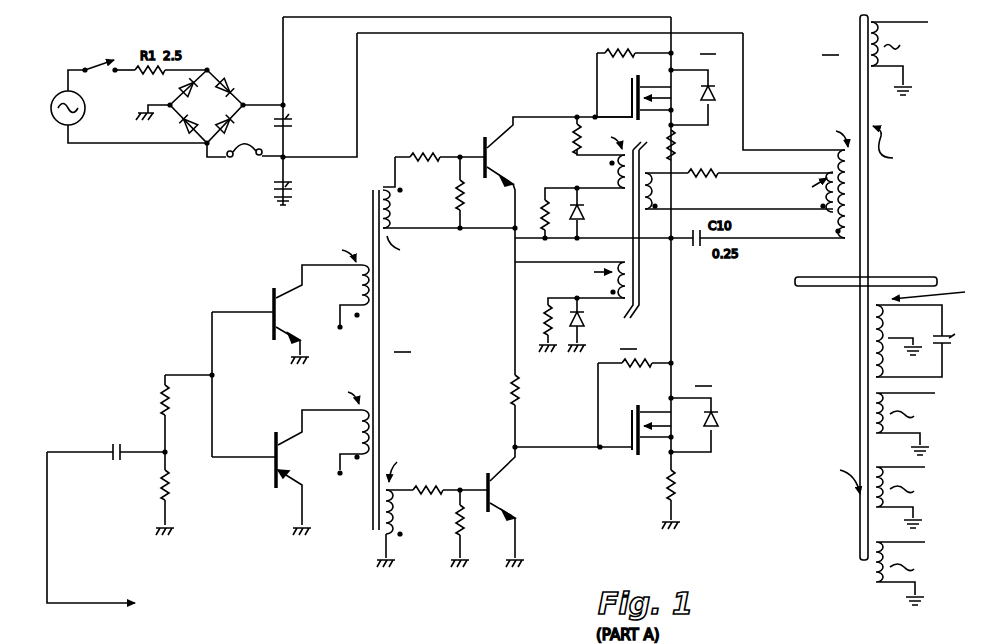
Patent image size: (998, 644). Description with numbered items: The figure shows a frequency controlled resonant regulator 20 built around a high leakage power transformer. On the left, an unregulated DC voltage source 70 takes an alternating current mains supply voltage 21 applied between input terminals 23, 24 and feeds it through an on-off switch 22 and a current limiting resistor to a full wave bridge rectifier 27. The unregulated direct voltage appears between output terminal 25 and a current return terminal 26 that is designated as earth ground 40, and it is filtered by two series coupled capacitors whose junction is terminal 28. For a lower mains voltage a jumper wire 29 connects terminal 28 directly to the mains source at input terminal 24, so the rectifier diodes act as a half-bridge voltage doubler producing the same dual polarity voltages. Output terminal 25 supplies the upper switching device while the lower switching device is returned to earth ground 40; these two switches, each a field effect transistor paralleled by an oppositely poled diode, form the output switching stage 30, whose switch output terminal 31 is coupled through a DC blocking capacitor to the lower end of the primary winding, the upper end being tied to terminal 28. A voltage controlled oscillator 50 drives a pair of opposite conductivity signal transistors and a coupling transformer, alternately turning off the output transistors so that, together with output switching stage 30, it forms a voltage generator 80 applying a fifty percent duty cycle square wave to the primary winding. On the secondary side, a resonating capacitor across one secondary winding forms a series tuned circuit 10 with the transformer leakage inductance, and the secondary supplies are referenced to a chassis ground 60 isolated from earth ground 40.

The series tuned circuit 10 is at (920, 326).
The resonant regulator 20 is at (605, 292).
The mains supply voltage 21 is at (56, 128).
The on-off switch 22 is at (98, 64).
The input terminal 23 is at (206, 66).
The input terminal 24 is at (205, 155).
The output terminal 25 is at (244, 104).
The current return terminal 26 is at (169, 103).
The full wave bridge rectifier 27 is at (215, 115).
The terminal 28 is at (285, 157).
The jumper wire 29 is at (242, 163).
The output switching stage 30 is at (759, 311).
The switch output terminal 31 is at (676, 248).
The earth ground 40 is at (138, 123).
The voltage controlled oscillator 50 is at (132, 532).
The chassis ground 60 is at (912, 95).
The unregulated DC voltage source 70 is at (262, 37).
The voltage generator 80 is at (155, 304).